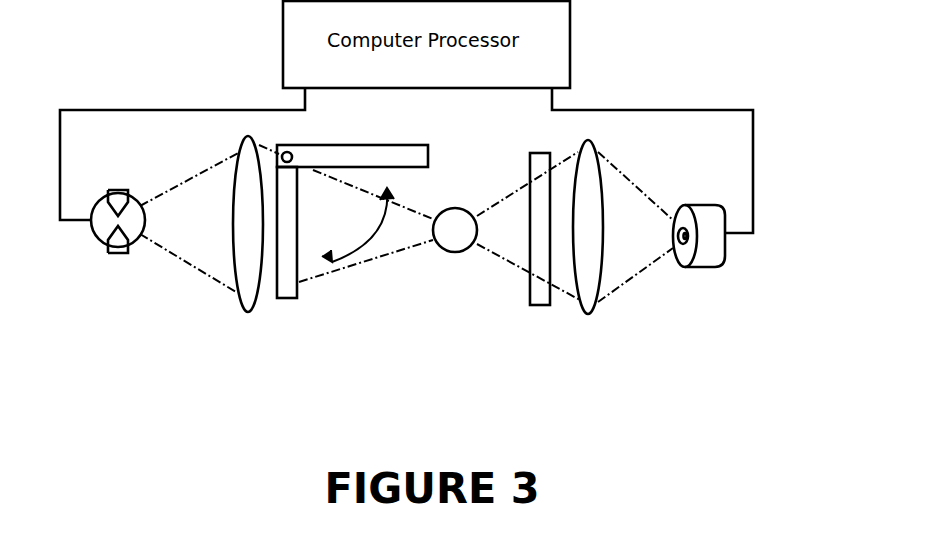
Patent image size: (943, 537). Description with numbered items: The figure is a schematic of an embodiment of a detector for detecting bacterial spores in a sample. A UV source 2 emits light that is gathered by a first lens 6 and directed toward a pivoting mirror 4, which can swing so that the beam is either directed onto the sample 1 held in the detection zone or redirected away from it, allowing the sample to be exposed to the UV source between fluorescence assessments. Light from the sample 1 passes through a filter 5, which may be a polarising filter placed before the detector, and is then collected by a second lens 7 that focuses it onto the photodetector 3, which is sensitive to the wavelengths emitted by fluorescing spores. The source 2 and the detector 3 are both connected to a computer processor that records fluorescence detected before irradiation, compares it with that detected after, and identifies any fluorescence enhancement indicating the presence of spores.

The sample 1 is at (447, 252).
The light source 2 is at (116, 253).
The detector 3 is at (700, 267).
The pivoting mirror 4 is at (290, 298).
The filter 5 is at (536, 305).
The collimating lens 6 is at (247, 312).
The focusing lens 7 is at (590, 313).